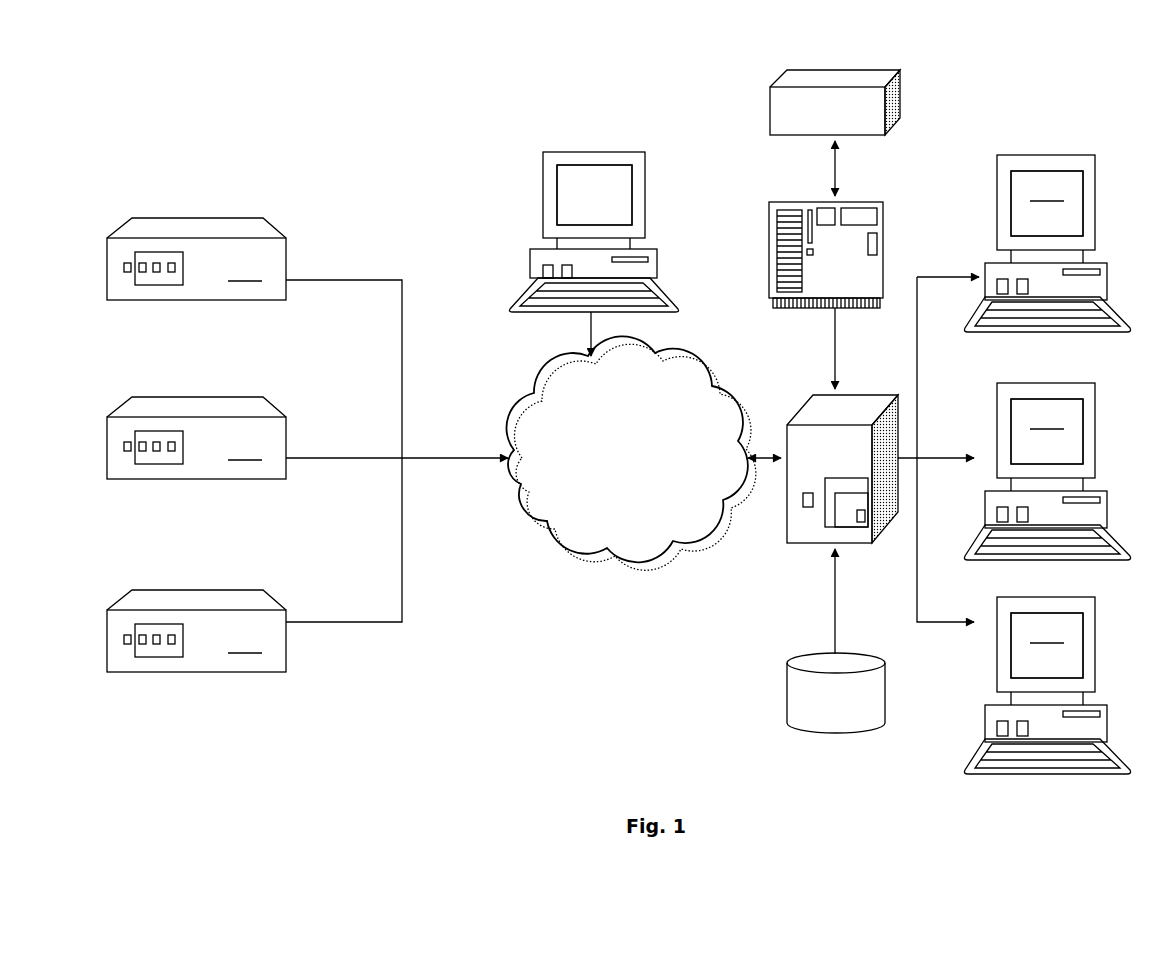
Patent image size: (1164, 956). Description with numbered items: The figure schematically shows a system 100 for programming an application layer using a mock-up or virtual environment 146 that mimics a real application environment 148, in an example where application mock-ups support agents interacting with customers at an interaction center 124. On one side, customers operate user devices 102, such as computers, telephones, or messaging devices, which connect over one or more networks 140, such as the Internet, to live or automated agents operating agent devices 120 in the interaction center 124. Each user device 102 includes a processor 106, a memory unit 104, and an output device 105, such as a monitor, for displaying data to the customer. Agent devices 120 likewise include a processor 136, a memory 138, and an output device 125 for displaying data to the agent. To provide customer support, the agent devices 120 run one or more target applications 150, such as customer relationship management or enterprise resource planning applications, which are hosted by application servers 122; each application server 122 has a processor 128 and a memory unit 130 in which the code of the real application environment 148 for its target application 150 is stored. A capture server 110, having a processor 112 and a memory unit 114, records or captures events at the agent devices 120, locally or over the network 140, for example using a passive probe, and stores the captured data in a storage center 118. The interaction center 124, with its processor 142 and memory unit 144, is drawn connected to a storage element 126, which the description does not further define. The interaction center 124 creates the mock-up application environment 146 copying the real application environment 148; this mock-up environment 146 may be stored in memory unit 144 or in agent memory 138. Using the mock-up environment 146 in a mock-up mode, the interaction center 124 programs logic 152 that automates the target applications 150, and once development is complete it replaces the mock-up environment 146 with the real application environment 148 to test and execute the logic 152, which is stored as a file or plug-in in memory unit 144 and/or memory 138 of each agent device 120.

The system 100 is at (296, 100).
The user device 102 is at (574, 206).
The memory unit 104 is at (558, 266).
The output device 105 is at (633, 184).
The processor 106 is at (543, 272).
The capture server 110 is at (827, 200).
The processor 112 is at (837, 215).
The memory unit 114 is at (880, 207).
The storage center 118 is at (818, 121).
The agent device 120 is at (1047, 464).
The application server 122 is at (196, 445).
The interaction center 124 is at (818, 461).
The output device 125 is at (1080, 190).
The database 126 is at (819, 706).
The processor 128 is at (126, 258).
The memory unit 130 is at (141, 283).
The processor 136 is at (995, 283).
The memory unit 138 is at (1022, 275).
The network 140 is at (611, 463).
The processor 142 is at (804, 504).
The memory unit 144 is at (825, 512).
The mock-up application environment 146 is at (853, 530).
The real application environment 148 is at (155, 274).
The target application 150 is at (175, 275).
The logic 152 is at (862, 507).